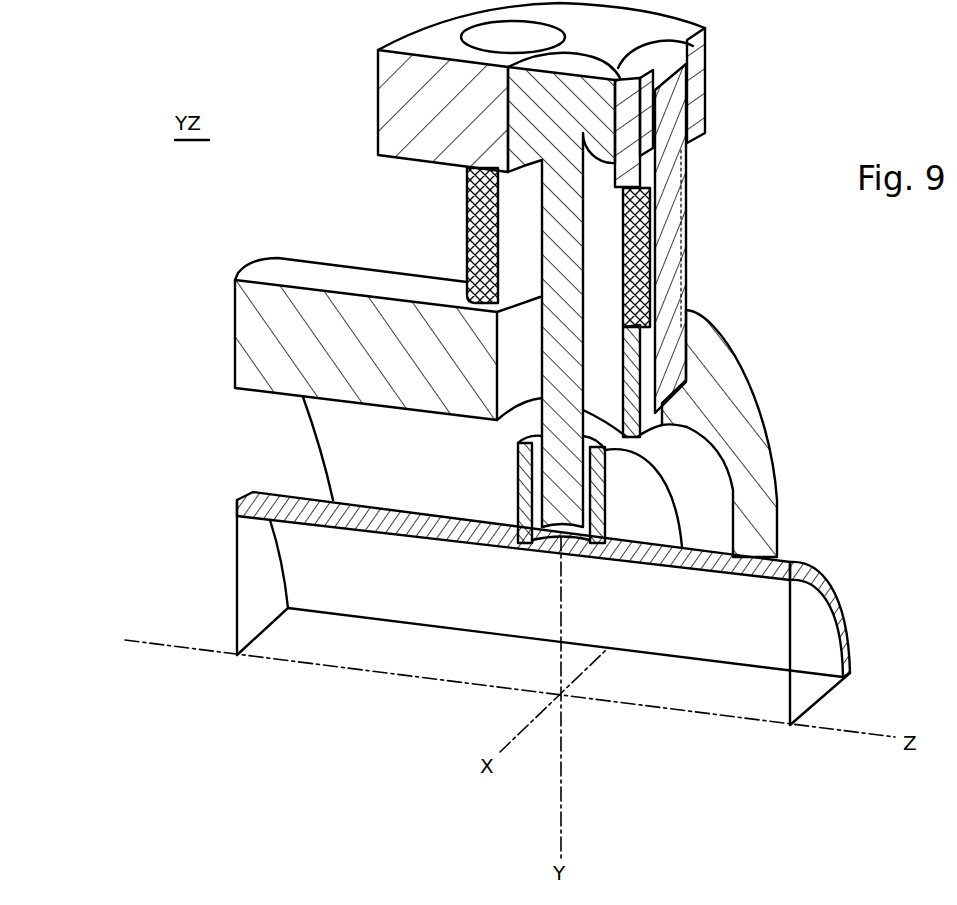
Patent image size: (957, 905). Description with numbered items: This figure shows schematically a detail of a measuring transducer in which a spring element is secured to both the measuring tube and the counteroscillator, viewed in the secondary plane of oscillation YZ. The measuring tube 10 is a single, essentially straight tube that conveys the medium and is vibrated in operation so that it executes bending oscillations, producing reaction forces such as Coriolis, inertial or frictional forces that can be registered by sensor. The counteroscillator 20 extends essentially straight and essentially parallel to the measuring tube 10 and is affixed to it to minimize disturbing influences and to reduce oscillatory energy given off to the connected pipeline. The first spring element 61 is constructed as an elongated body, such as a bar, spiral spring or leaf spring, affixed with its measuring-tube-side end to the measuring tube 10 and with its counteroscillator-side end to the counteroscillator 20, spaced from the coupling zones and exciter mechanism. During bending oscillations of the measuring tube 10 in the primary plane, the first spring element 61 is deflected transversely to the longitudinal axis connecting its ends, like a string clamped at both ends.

The measuring tube 10 is at (790, 560).
The counteroscillator 20 is at (262, 272).
The first spring element 61 is at (470, 231).